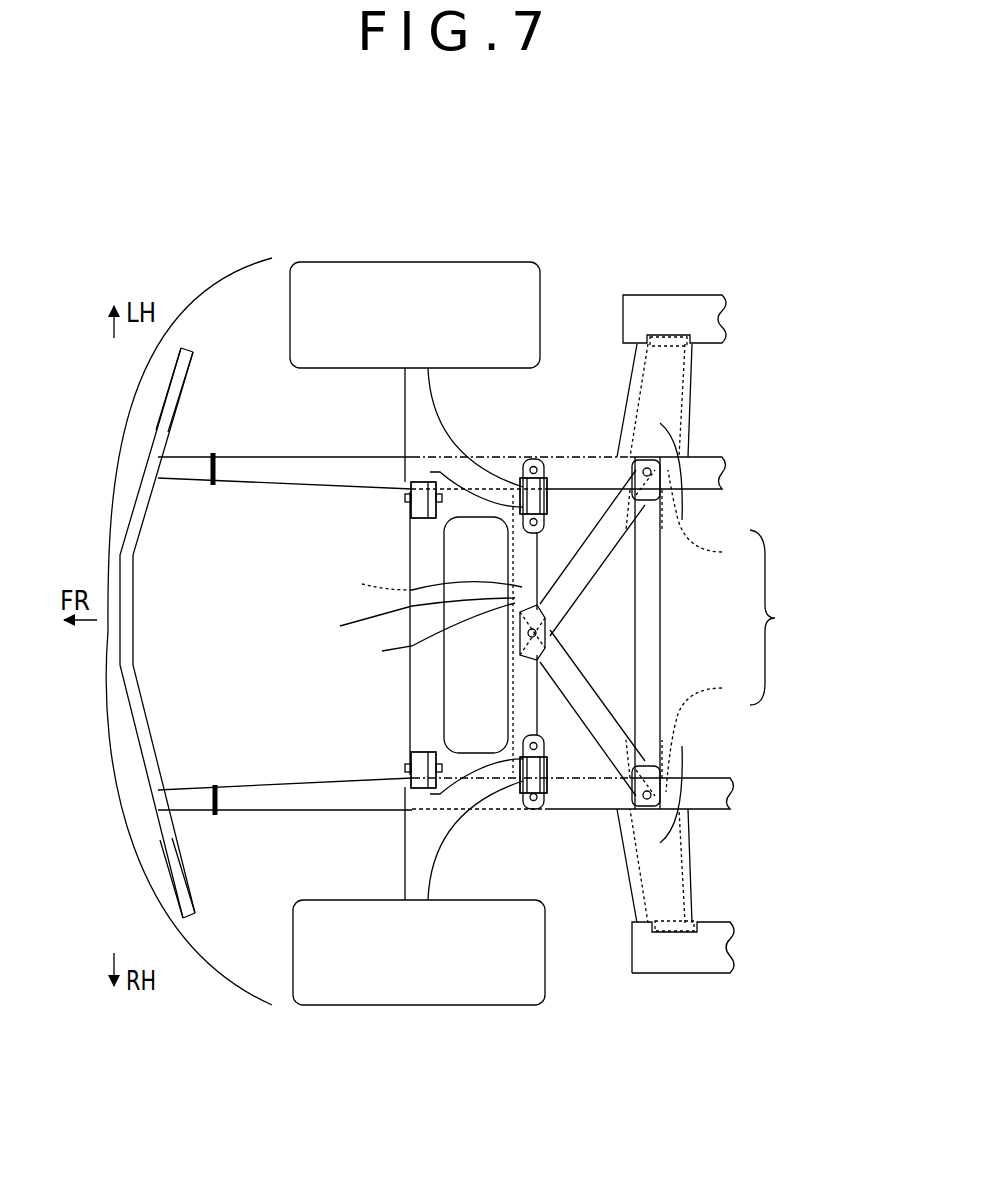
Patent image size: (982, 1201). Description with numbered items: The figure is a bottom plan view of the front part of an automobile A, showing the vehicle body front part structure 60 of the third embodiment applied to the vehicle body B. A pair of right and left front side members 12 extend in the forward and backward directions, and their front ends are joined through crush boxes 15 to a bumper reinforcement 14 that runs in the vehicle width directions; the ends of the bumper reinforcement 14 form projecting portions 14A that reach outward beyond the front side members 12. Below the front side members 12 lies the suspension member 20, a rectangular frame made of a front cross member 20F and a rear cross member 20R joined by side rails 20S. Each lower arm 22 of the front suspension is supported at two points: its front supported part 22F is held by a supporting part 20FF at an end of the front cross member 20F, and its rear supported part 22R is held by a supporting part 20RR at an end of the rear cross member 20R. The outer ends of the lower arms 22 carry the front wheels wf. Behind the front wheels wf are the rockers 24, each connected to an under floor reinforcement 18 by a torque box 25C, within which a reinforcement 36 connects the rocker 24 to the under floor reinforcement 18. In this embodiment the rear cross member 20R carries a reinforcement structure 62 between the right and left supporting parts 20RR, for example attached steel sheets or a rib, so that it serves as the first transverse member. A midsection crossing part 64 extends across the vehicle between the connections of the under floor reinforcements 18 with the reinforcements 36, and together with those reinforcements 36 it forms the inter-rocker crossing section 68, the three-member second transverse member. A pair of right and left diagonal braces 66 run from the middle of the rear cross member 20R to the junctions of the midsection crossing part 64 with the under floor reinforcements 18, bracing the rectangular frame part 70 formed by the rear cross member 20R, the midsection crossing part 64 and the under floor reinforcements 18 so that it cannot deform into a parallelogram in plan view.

The front side member 12 is at (282, 476).
The bumper reinforcement 14 is at (128, 618).
The projecting portion 14A is at (178, 394).
The crush box 15 is at (193, 468).
The under floor reinforcement 18 is at (705, 463).
The suspension member 20 is at (445, 699).
The side rail 20S is at (462, 508).
The front cross member 20F is at (402, 618).
The rear cross member 20R is at (420, 634).
The supporting part 20FF is at (410, 520).
The supporting part 20RR is at (560, 418).
The lower arm 22 is at (406, 410).
The supported part 22F is at (423, 635).
The supported part 22R is at (533, 635).
The rocker 24 is at (688, 296).
The torque box 25C is at (698, 414).
The reinforcement 36 is at (689, 631).
The vehicle body front part structure 60 is at (624, 262).
The reinforcement structure 62 is at (425, 582).
The midsection crossing part 64 is at (658, 625).
The diagonal brace 66 is at (600, 548).
The inter-rocker crossing section 68 is at (779, 617).
The rectangular frame part 70 is at (597, 828).
The automobile A is at (304, 250).
The vehicle body B is at (736, 978).
The front wheel wf is at (461, 262).